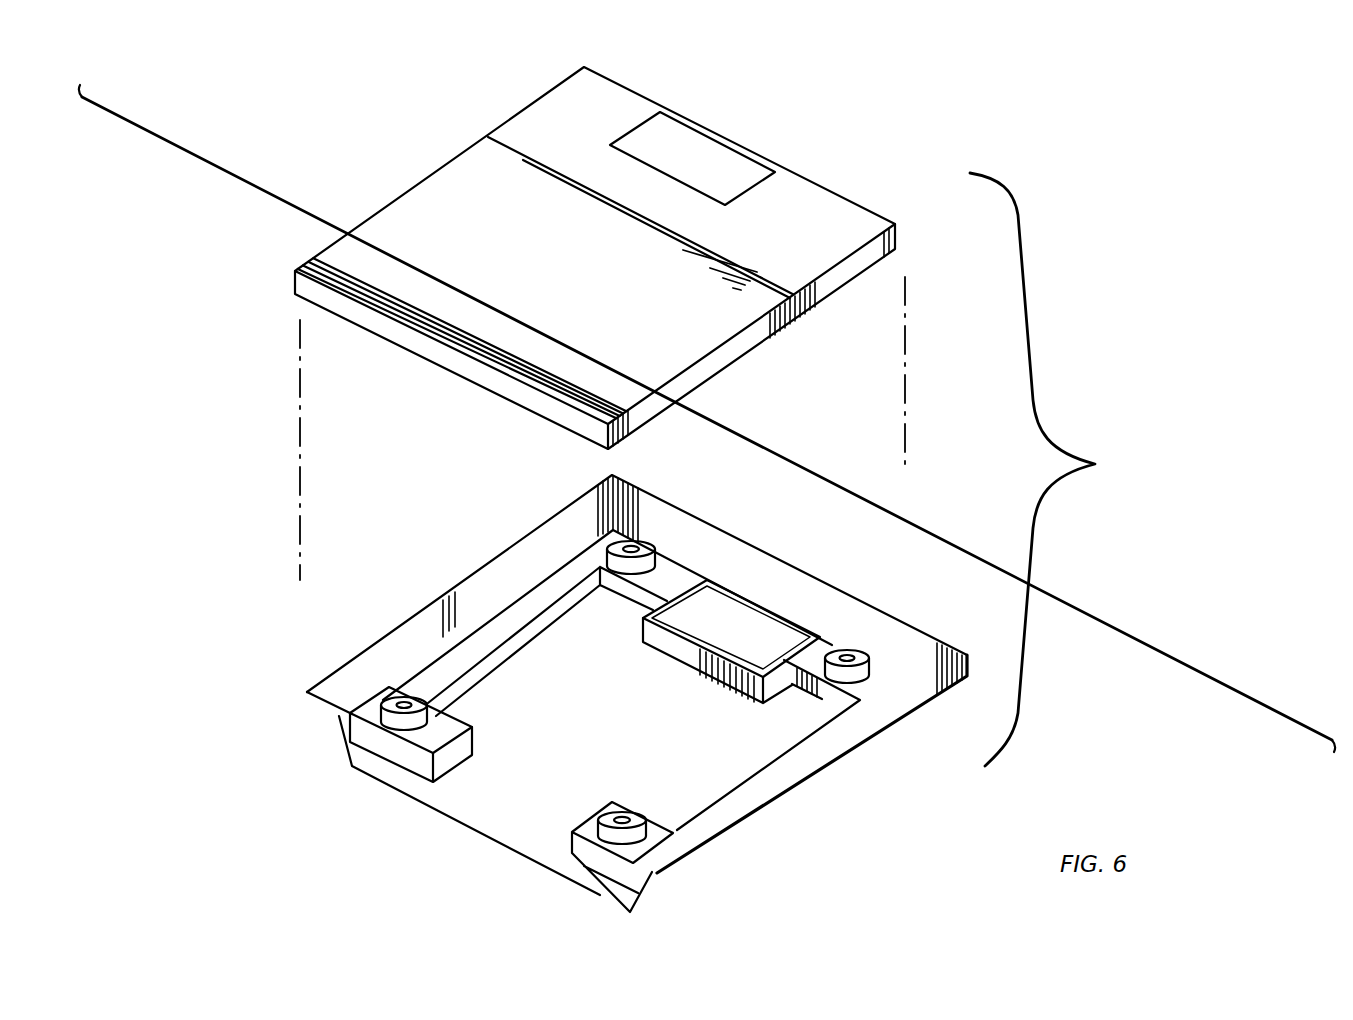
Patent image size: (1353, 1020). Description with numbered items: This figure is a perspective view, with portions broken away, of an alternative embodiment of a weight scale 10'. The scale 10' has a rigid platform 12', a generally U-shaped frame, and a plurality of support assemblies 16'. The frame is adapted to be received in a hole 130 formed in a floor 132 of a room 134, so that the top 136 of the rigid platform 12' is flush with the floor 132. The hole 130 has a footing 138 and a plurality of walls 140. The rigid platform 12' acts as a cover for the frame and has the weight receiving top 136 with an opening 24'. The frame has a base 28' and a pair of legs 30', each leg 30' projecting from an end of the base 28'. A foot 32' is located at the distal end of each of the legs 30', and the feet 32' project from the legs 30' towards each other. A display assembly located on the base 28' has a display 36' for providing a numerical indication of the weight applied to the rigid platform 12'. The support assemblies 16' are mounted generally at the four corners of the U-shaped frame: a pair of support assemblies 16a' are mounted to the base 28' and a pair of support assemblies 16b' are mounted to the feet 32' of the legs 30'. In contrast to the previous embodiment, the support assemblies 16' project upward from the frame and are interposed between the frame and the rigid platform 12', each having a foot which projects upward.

The weight scale 10' is at (1059, 469).
The rigid platform 12' is at (606, 258).
The opening 24' is at (711, 158).
The base 28' is at (644, 670).
The legs 30' is at (637, 685).
The foot 32' is at (440, 734).
The display 36' is at (760, 628).
The support assemblies 16' is at (688, 529).
The support assemblies 16a' is at (896, 628).
The support assemblies 16b' is at (593, 857).
The hole 130 is at (667, 715).
The floor 132 is at (332, 622).
The room 134 is at (1177, 575).
The top 136 is at (591, 338).
The footing 138 is at (751, 752).
The walls 140 is at (477, 583).